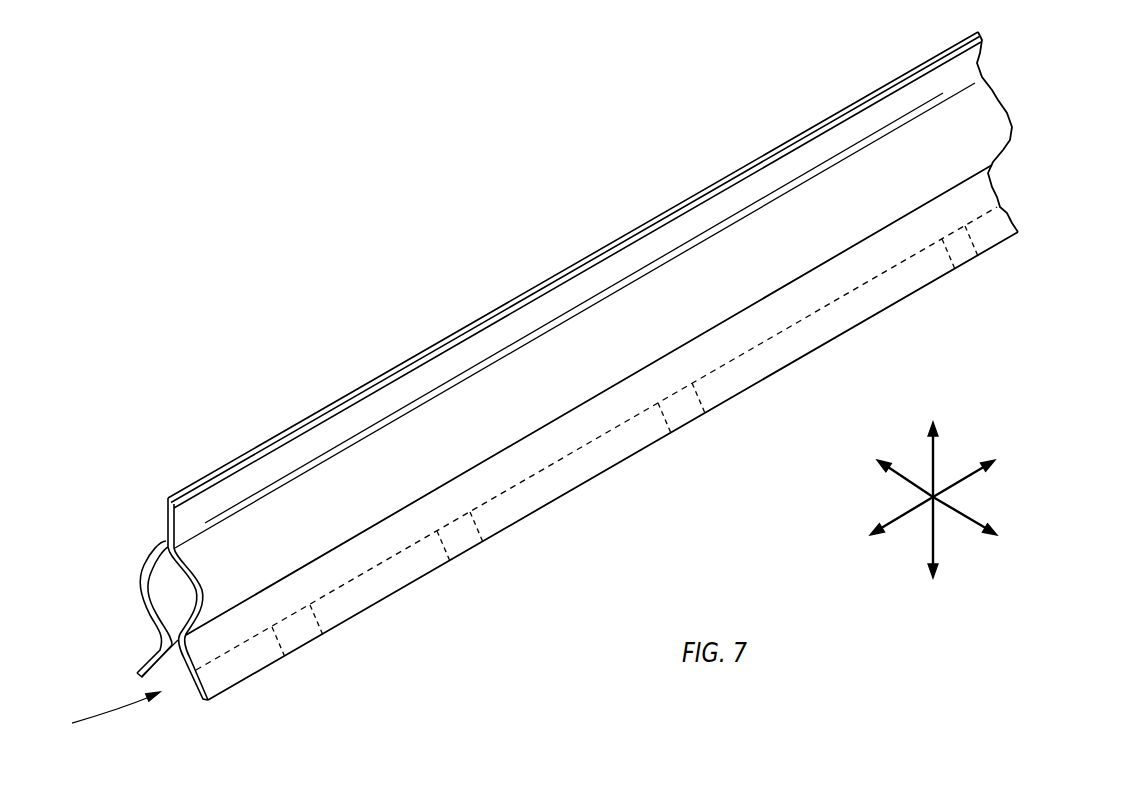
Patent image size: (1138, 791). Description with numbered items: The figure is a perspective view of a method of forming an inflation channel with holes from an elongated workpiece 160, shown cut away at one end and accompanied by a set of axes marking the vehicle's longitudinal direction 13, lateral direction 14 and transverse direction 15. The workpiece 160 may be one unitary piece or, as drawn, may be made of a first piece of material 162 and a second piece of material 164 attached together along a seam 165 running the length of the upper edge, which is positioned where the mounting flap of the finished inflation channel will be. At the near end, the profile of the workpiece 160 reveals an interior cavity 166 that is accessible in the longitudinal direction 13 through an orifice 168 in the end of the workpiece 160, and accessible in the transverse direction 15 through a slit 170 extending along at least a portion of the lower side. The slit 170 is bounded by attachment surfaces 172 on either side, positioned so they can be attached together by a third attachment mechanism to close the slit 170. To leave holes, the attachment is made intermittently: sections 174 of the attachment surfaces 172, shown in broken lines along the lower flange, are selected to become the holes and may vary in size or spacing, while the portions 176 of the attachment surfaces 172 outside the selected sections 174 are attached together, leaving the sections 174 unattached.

The workpiece 160 is at (585, 381).
The first piece of material 162 is at (165, 548).
The second piece of material 164 is at (262, 470).
The seam 165 is at (220, 470).
The interior cavity 166 is at (163, 588).
The orifice 168 is at (175, 636).
The slit 170 is at (102, 713).
The attachment surfaces 172 is at (158, 671).
The sections 174 is at (300, 633).
The portions 176 is at (250, 667).
The longitudinal direction 13 is at (895, 522).
The lateral direction 14 is at (968, 523).
The transverse direction 15 is at (932, 452).